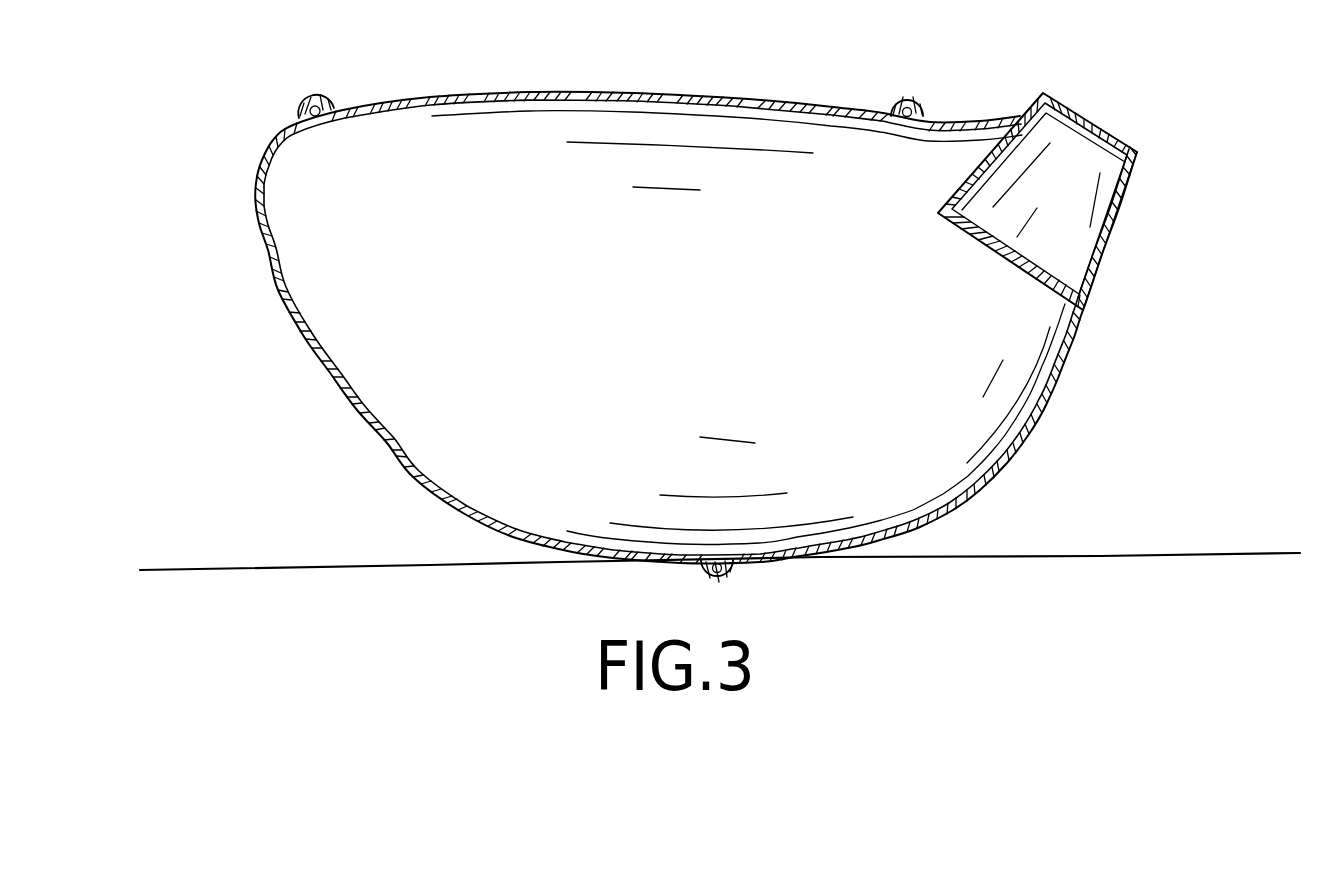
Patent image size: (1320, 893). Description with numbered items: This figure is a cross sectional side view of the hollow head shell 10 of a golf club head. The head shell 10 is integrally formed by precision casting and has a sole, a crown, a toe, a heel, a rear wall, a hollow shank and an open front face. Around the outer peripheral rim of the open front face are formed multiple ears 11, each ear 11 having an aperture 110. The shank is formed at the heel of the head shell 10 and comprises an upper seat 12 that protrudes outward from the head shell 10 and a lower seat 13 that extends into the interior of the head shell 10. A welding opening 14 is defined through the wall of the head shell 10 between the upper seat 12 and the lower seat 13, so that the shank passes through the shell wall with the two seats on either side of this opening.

The head shell 10 is at (300, 335).
The ear 11 is at (331, 106).
The aperture 110 is at (303, 108).
The upper seat 12 is at (1140, 155).
The lower seat 13 is at (1018, 268).
The welding opening 14 is at (1103, 233).